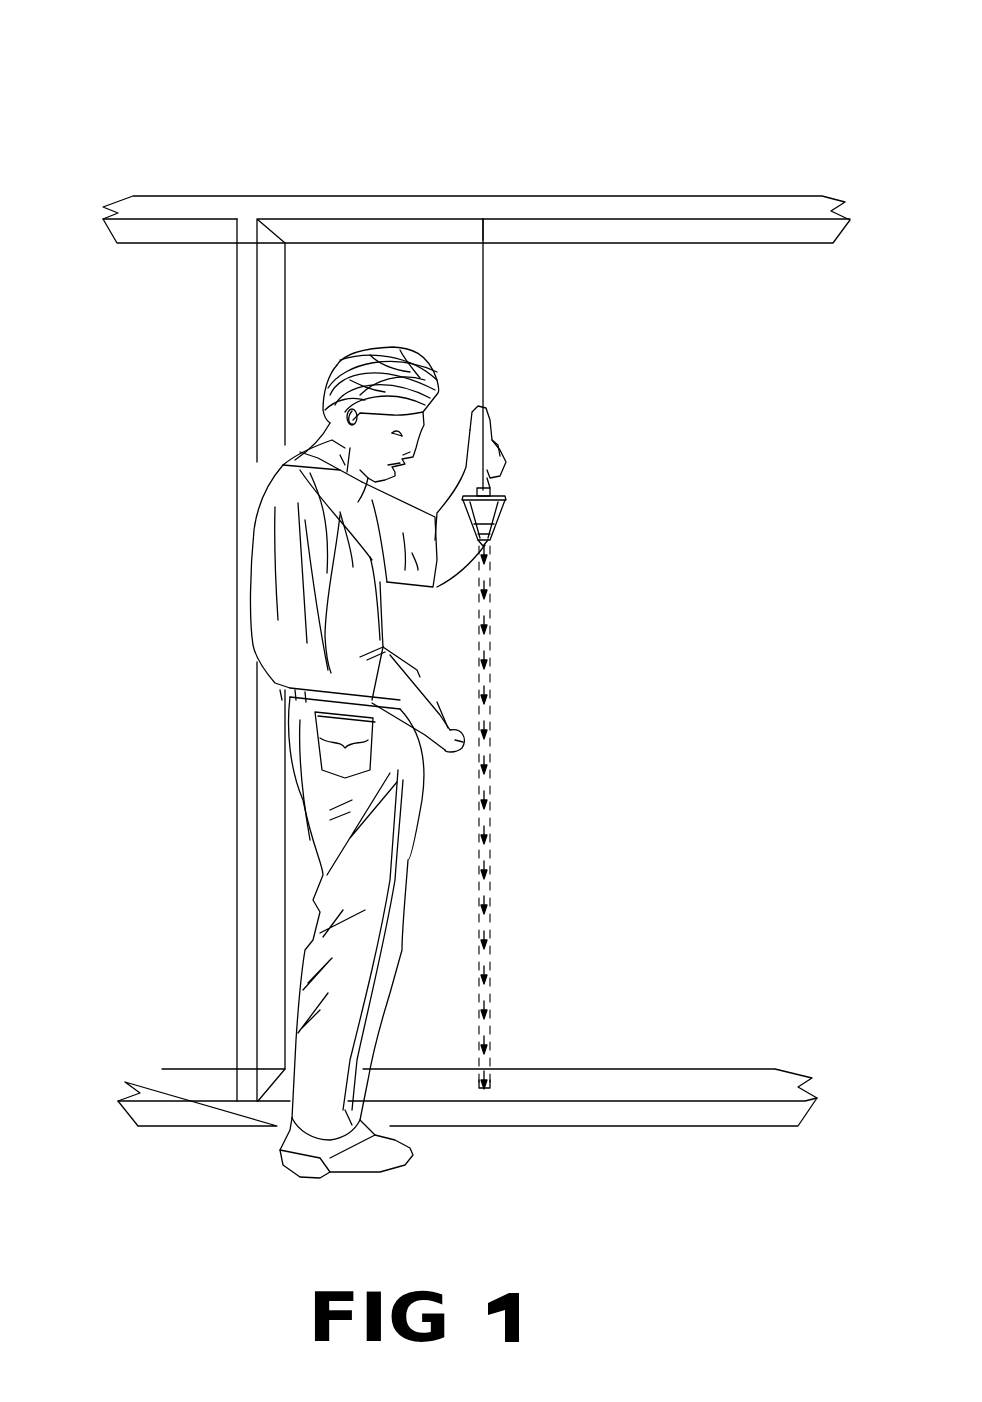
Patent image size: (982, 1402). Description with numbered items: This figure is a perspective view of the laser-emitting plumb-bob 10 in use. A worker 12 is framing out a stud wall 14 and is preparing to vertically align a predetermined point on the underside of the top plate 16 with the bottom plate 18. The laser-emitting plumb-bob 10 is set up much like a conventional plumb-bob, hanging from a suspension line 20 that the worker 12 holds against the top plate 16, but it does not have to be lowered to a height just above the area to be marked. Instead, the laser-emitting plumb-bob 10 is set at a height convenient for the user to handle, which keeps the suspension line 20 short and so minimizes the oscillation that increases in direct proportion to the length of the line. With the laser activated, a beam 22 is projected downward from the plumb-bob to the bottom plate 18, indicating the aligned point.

The laser-emitting plumb-bob 10 is at (538, 505).
The worker 12 is at (360, 360).
The stud wall 14 is at (372, 196).
The top plate 16 is at (483, 228).
The bottom plate 18 is at (485, 1088).
The suspension line 20 is at (483, 370).
The beam 22 is at (508, 793).